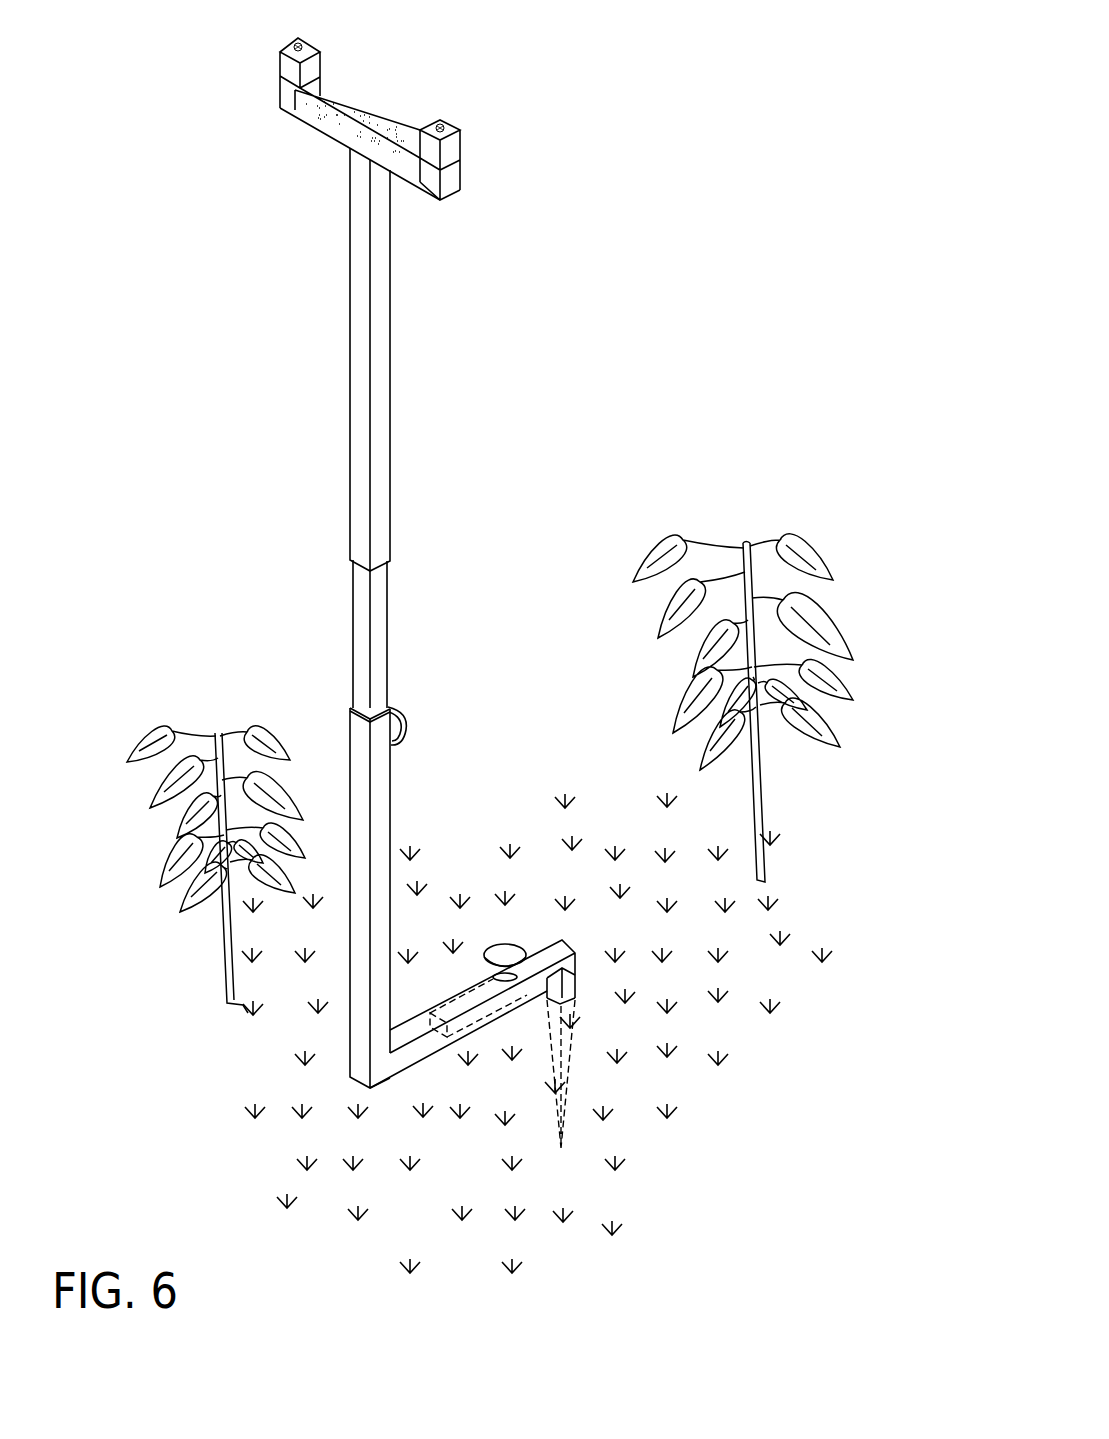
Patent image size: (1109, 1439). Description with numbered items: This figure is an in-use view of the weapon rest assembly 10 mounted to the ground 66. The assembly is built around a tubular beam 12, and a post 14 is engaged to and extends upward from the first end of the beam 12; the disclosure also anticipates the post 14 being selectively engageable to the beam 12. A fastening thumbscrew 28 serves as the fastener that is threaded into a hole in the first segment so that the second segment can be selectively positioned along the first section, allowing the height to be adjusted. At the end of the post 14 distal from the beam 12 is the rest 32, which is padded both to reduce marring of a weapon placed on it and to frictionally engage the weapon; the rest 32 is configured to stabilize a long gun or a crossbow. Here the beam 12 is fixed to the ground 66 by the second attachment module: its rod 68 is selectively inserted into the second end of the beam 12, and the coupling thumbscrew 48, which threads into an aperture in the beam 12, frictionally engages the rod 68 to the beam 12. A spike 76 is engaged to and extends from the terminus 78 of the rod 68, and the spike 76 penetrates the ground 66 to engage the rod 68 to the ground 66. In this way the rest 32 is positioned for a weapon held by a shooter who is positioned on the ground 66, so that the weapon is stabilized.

The weapon rest assembly 10 is at (793, 117).
The beam 12 is at (415, 1013).
The post 14 is at (388, 488).
The fastening thumbscrew 28 is at (405, 712).
The rest 32 is at (367, 113).
The coupling thumbscrew 48 is at (504, 953).
The ground 66 is at (723, 962).
The rod 68 is at (508, 997).
The spike 76 is at (567, 1048).
The terminus 78 is at (562, 942).